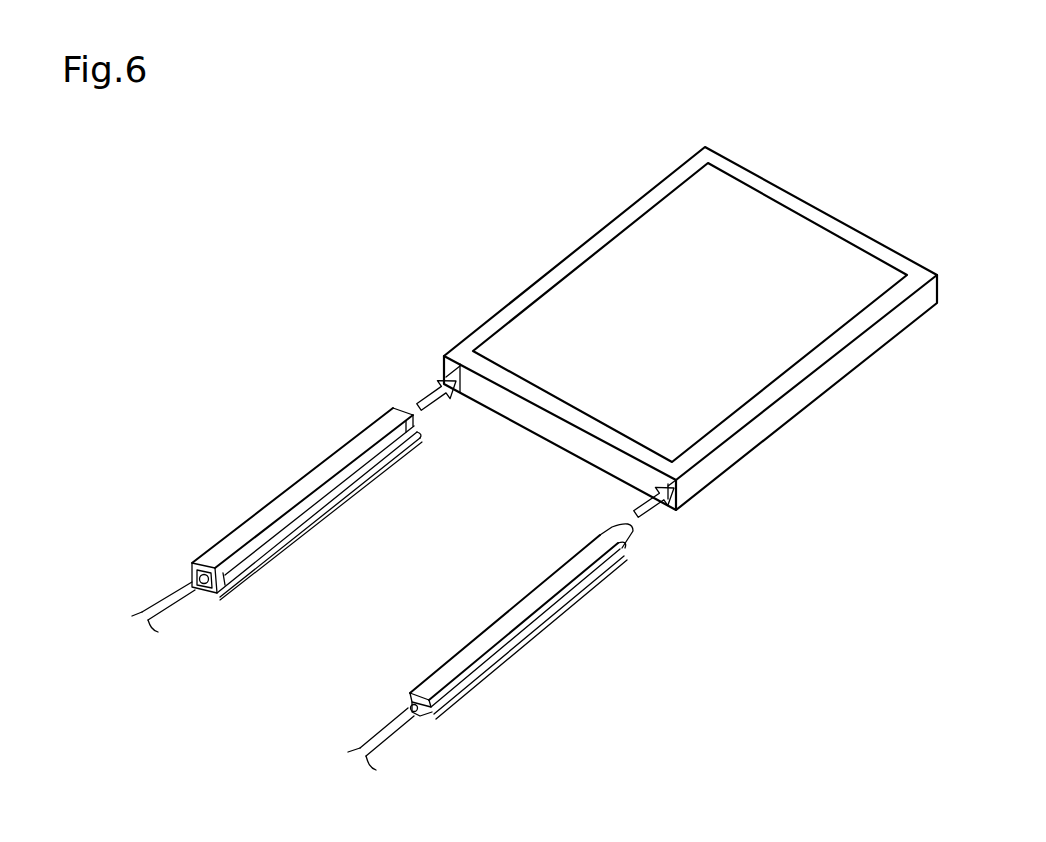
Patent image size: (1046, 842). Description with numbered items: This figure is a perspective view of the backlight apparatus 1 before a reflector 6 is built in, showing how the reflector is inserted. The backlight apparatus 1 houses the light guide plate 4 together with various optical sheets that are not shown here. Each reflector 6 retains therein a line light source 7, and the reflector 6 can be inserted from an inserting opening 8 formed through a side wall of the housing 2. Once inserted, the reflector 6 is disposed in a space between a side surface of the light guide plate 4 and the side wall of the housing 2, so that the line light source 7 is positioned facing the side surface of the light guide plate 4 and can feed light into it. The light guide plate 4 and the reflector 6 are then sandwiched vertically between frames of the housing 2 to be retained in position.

The backlight apparatus 1 is at (693, 508).
The housing 2 is at (787, 381).
The light guide plate 4 is at (791, 313).
The reflector 6 is at (306, 478).
The line light source 7 is at (315, 508).
The inserting opening 8 is at (444, 362).